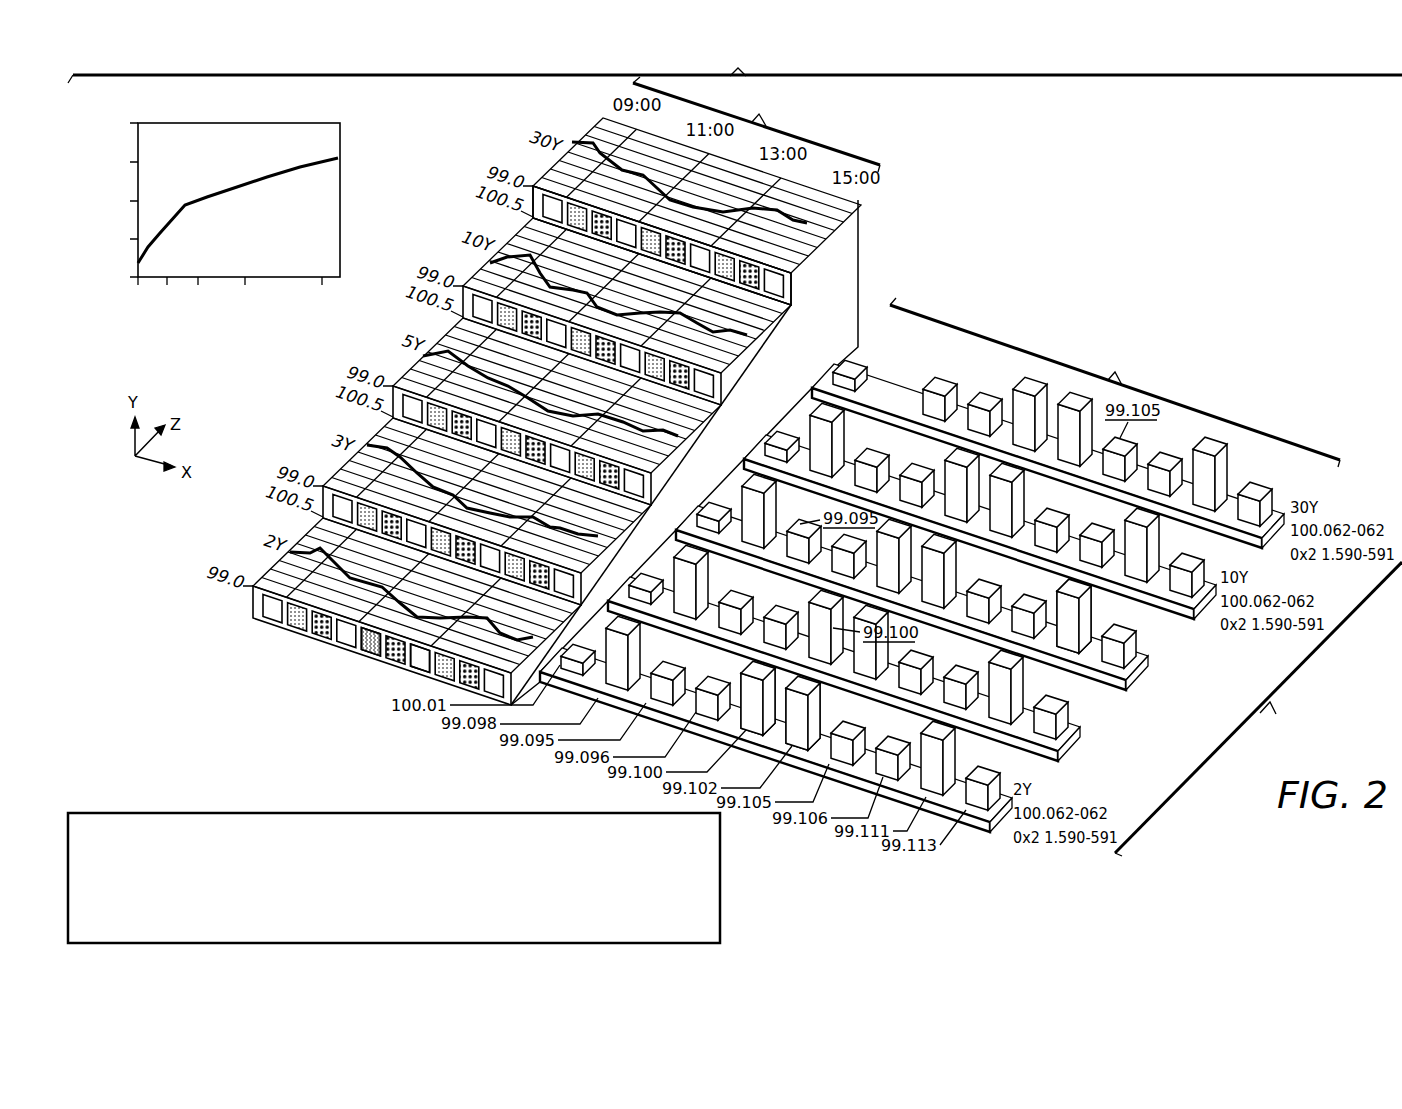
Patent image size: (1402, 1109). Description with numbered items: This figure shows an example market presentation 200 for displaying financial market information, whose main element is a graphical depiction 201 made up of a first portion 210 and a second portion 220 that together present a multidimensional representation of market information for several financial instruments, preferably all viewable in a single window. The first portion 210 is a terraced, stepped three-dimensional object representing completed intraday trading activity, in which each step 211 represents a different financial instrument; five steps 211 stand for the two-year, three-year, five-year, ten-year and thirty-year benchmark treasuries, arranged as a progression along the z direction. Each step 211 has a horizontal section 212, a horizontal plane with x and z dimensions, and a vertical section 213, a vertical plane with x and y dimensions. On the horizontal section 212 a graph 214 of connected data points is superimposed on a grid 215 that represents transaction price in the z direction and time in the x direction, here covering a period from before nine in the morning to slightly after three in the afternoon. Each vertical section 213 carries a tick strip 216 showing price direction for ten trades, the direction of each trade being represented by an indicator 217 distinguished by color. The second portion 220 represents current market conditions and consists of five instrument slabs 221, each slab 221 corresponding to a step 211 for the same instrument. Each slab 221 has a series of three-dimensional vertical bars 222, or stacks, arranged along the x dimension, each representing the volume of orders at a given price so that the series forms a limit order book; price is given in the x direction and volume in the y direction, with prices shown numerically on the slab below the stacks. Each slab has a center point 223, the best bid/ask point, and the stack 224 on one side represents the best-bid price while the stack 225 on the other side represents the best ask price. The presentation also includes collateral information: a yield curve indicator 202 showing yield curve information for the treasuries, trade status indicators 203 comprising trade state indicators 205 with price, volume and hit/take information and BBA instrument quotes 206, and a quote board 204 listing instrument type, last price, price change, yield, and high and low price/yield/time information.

The market presentation 200 is at (735, 64).
The graphical depiction 201 is at (960, 184).
The yield curve indicator 202 is at (340, 180).
The trade status indicators 203 is at (1258, 709).
The quote board 204 is at (272, 813).
The trade state indicators 205 is at (1147, 645).
The BBA instrument quotes 206 is at (1078, 713).
The first portion 210 is at (756, 124).
The step 211 is at (507, 238).
The horizontal section 212 is at (603, 118).
The vertical section 213 is at (792, 288).
The graph 214 is at (372, 441).
The grid 215 is at (338, 470).
The tick strip 216 is at (369, 655).
The indicator 217 is at (420, 668).
The second portion 220 is at (1115, 382).
The instrument slab 221 is at (877, 383).
The vertical bar 222 is at (1054, 592).
The center point 223 is at (977, 830).
The stack 224 is at (748, 668).
The stack 225 is at (813, 700).